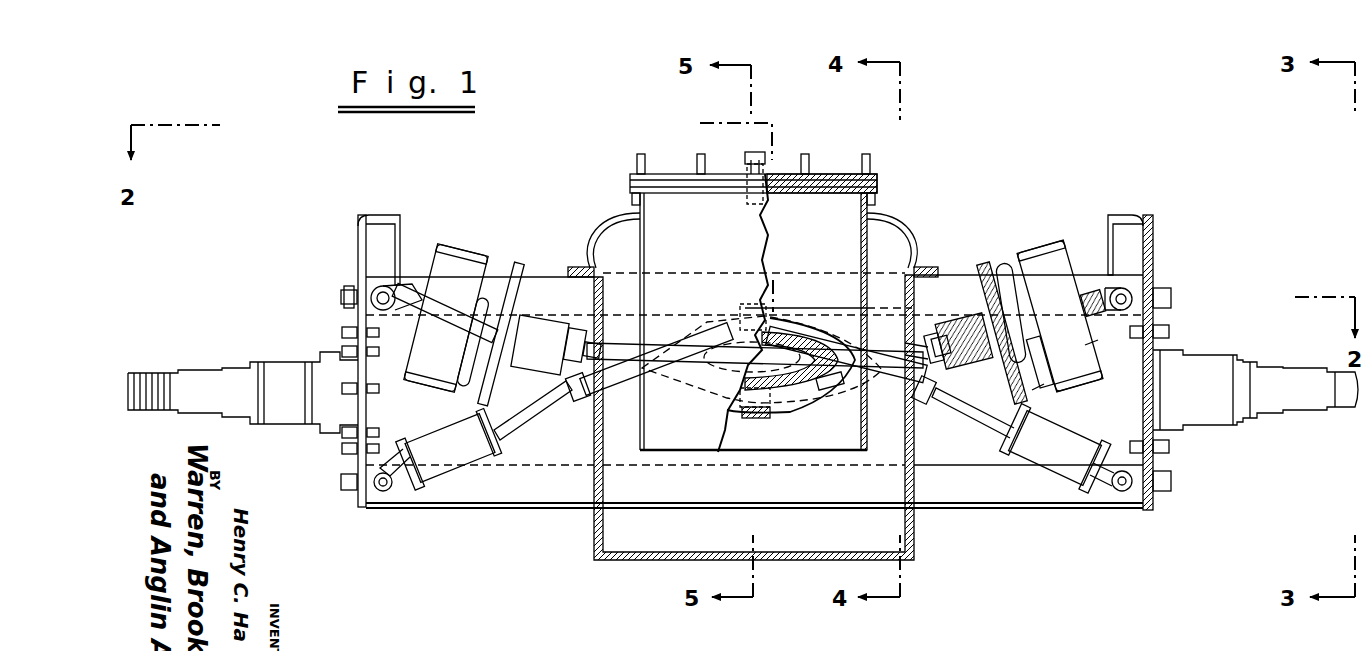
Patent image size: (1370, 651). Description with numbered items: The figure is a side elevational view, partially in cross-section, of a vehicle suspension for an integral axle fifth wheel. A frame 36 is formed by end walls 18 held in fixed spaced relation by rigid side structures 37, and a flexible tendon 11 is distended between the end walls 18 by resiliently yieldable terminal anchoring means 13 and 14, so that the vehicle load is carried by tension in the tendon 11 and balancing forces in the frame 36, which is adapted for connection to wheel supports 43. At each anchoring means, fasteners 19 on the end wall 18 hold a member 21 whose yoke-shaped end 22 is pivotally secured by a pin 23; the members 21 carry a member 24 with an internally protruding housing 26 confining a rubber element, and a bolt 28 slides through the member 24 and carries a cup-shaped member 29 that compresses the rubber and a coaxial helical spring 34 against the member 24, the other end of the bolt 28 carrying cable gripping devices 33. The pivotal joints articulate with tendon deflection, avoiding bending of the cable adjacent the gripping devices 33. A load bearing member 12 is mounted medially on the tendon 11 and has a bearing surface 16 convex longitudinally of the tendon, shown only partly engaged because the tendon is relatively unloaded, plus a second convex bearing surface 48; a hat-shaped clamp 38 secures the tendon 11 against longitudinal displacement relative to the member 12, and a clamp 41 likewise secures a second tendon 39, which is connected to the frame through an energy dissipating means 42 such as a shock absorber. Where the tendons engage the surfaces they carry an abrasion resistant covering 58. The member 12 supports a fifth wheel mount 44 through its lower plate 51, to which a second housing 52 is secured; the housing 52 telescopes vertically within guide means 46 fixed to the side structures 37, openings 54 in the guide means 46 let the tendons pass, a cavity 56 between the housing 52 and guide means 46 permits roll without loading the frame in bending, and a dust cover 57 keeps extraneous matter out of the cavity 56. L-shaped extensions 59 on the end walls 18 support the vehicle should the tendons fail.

The flexible tendon 11 is at (800, 410).
The load bearing member 12 is at (815, 350).
The resiliently yieldable terminal anchoring means 13 is at (1050, 250).
The resiliently yieldable terminal anchoring means 14 is at (462, 245).
The bearing surface 16 is at (800, 388).
The end wall 18 is at (340, 331).
The fasteners 19 is at (341, 297).
The member 21 is at (455, 330).
The yoke-shaped end 22 is at (406, 316).
The pin 23 is at (390, 290).
The member 24 is at (520, 300).
The internally protruding housing 26 is at (1035, 385).
The bolt 28 is at (972, 320).
The cup-shaped member 29 is at (1095, 345).
The cable gripping devices 33 is at (532, 364).
The helical spring 34 is at (1008, 266).
The frame 36 is at (548, 250).
The side structures 37 is at (472, 503).
The hat-shaped clamp 38 is at (757, 418).
The tendon 39 is at (845, 340).
The clamp 41 is at (745, 300).
The energy dissipating means 42 is at (447, 430).
The wheel supports 43 is at (195, 375).
The fifth wheel mount 44 is at (683, 160).
The guide means 46 is at (886, 277).
The second convex bearing surface 48 is at (1170, 448).
The lower plate 51 is at (830, 190).
The second housing 52 is at (717, 240).
The openings 54 is at (914, 465).
The cavity 56 is at (594, 468).
The dust cover 57 is at (608, 232).
The abrasion resistant covering 58 is at (568, 381).
The L-shaped extensions 59 is at (372, 216).